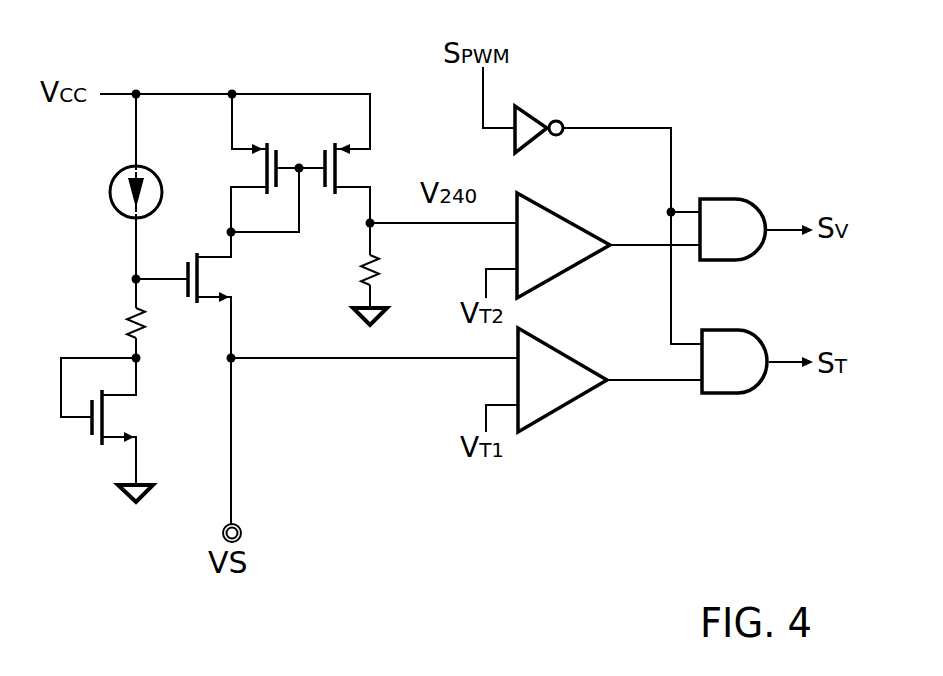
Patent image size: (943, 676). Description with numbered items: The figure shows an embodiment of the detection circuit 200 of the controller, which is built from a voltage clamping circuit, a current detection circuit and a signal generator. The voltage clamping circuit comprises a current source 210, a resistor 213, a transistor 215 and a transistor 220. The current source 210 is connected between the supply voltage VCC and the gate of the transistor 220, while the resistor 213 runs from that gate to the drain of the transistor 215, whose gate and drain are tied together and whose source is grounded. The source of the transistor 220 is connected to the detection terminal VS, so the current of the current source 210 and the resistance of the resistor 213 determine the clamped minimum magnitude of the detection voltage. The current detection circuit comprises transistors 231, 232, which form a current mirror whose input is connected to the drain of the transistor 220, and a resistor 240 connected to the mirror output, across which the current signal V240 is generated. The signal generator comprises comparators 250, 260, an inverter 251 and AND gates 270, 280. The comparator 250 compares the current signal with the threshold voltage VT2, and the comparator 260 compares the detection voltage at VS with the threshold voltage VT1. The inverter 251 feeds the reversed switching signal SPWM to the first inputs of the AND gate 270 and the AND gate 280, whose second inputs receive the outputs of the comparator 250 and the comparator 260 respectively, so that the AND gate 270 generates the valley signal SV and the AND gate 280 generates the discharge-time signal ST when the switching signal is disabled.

The detection circuit 200 is at (805, 75).
The current source 210 is at (104, 195).
The resistor 213 is at (120, 327).
The transistor 215 is at (142, 422).
The transistor 220 is at (238, 275).
The transistor 231 is at (227, 170).
The transistor 232 is at (373, 170).
The resistor 240 is at (385, 275).
The comparator 250 is at (567, 209).
The inverter 251 is at (530, 112).
The comparator 260 is at (565, 348).
The AND gate 270 is at (725, 197).
The AND gate 280 is at (725, 397).